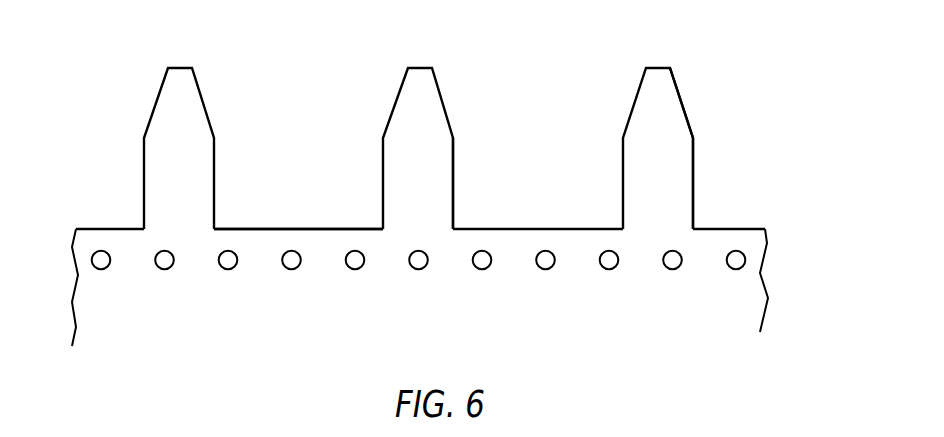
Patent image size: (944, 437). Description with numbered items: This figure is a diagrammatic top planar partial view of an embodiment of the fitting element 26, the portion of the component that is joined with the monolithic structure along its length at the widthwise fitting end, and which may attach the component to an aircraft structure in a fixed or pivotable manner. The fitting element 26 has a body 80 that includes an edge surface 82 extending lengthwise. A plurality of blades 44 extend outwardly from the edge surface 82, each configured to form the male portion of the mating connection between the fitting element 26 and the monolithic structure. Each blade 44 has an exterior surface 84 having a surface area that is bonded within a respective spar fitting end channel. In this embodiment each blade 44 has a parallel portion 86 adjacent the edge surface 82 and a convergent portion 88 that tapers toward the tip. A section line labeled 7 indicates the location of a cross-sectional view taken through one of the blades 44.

The fitting element 26 is at (786, 124).
The blade 44 is at (128, 161).
The body 80 is at (663, 312).
The edge surface 82 is at (333, 225).
The exterior surface 84 is at (453, 187).
The parallel portion 86 is at (703, 137).
The convergent portion 88 is at (679, 62).
The section line 7- 7 is at (205, 373).